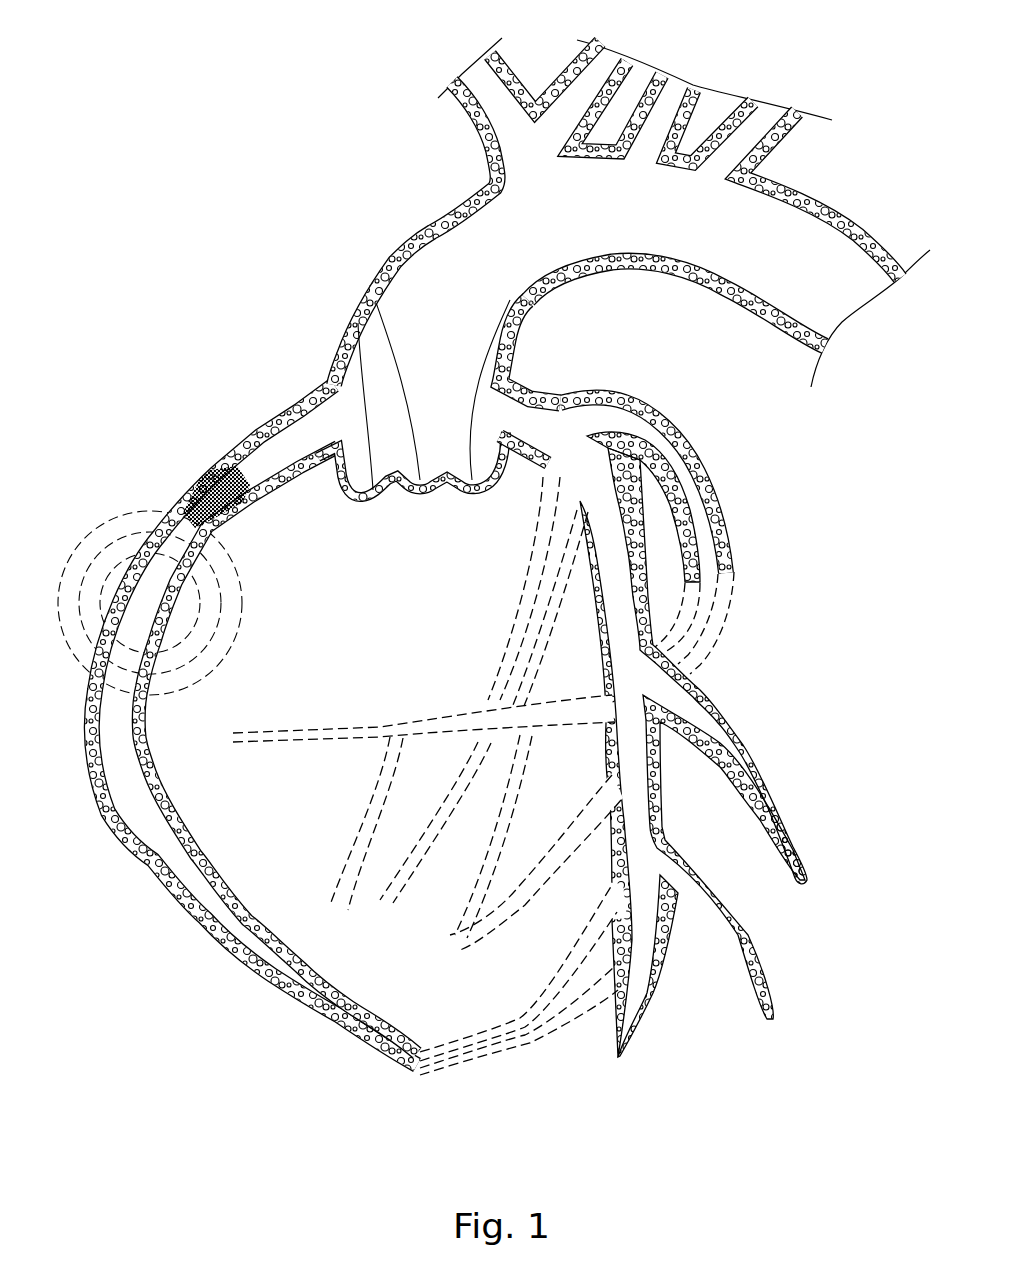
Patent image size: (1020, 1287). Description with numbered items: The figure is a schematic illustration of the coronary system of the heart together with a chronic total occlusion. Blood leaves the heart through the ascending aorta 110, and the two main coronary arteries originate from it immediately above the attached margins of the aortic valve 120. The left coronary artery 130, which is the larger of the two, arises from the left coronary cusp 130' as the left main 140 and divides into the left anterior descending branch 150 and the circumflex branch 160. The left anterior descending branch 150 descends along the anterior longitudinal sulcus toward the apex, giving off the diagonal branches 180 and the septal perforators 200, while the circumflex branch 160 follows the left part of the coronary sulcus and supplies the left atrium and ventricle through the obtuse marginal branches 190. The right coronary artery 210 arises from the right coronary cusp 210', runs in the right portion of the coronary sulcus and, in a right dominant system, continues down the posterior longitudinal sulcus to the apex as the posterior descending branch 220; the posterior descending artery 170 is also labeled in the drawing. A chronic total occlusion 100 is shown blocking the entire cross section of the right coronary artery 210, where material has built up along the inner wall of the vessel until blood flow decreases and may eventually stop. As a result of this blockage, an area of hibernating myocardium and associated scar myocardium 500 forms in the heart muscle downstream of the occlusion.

The chronic total occlusion 100 is at (215, 488).
The ascending aorta 110 is at (427, 323).
The aortic valve 120 is at (363, 378).
The left coronary artery 130 is at (669, 336).
The left coronary cusp 130' is at (558, 351).
The left main 140 is at (545, 425).
The left anterior descending branch 150 is at (637, 442).
The circumflex branch 160 is at (685, 488).
The posterior descending artery 170 is at (572, 457).
The diagonal branches 180 is at (743, 938).
The obtuse marginal branches 190 is at (363, 1007).
The septal perforators 200 is at (480, 1053).
The right coronary artery 210 is at (254, 707).
The right coronary cusp 210' is at (364, 233).
The posterior descending branch 220 is at (263, 955).
The area of hibernating myocardium and scar myocardium 500 is at (120, 513).